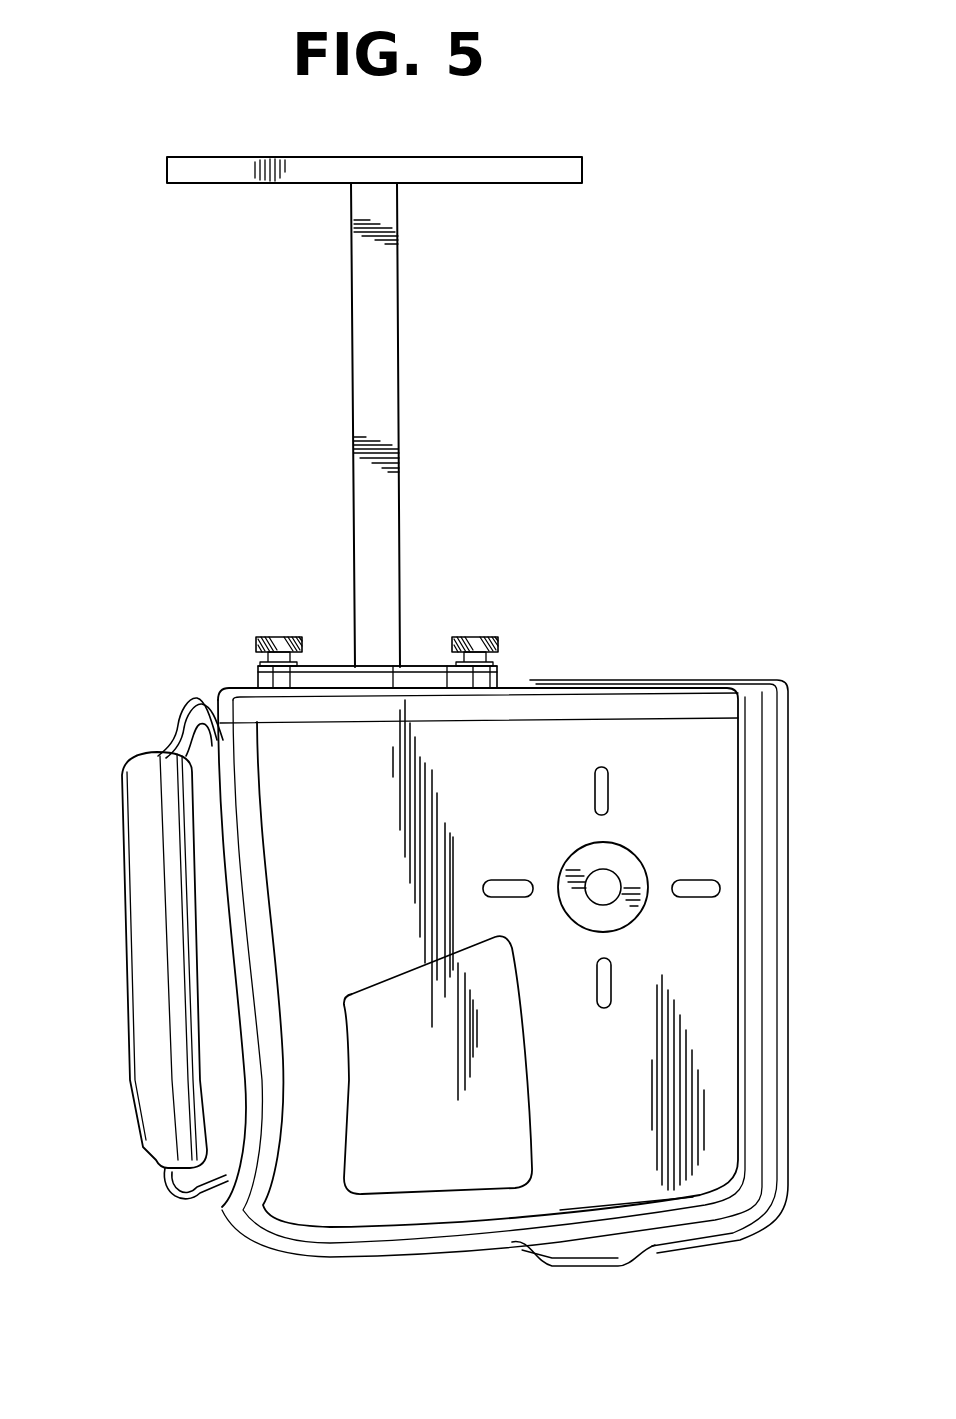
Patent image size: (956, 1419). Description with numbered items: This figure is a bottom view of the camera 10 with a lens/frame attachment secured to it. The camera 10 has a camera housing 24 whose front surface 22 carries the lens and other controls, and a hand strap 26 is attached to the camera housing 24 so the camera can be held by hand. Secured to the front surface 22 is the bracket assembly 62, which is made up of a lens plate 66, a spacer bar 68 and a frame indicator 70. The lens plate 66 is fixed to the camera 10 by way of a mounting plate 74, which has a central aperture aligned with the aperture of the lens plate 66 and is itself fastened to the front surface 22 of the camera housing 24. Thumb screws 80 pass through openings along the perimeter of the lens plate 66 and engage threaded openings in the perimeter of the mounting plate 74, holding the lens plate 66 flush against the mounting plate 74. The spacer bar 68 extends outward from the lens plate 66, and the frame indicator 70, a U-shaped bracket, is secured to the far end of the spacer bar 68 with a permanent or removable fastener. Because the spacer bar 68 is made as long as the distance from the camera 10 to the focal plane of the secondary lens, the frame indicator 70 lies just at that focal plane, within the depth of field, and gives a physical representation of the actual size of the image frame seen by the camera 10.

The camera 10 is at (160, 729).
The front surface 22 is at (668, 680).
The camera housing 24 is at (706, 1182).
The hand strap 26 is at (145, 880).
The bracket assembly 62 is at (374, 375).
The lens plate 66 is at (322, 665).
The spacer bar 68 is at (352, 352).
The frame indicator 70 is at (503, 157).
The mounting plate 74 is at (500, 676).
The thumb screws 80 is at (270, 638).